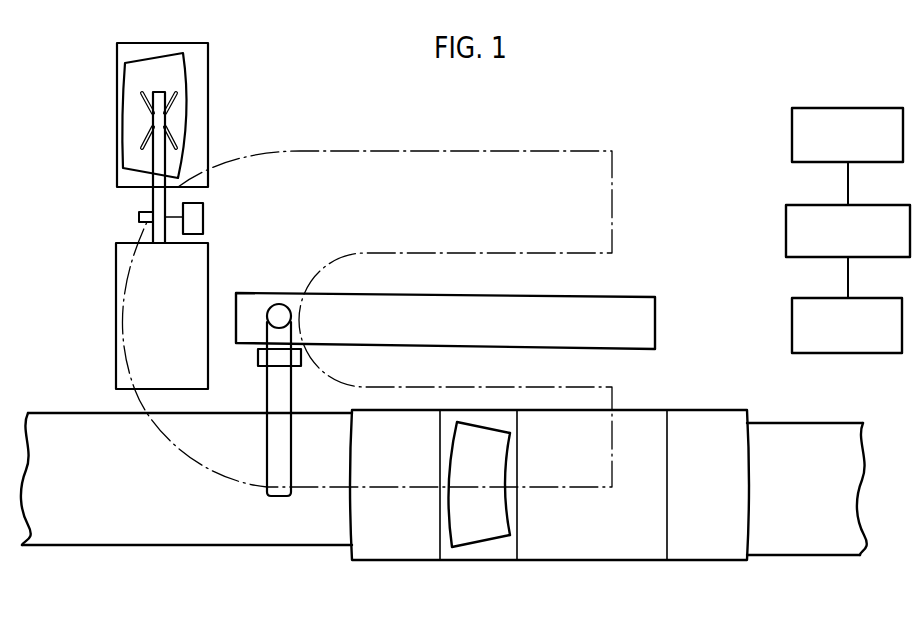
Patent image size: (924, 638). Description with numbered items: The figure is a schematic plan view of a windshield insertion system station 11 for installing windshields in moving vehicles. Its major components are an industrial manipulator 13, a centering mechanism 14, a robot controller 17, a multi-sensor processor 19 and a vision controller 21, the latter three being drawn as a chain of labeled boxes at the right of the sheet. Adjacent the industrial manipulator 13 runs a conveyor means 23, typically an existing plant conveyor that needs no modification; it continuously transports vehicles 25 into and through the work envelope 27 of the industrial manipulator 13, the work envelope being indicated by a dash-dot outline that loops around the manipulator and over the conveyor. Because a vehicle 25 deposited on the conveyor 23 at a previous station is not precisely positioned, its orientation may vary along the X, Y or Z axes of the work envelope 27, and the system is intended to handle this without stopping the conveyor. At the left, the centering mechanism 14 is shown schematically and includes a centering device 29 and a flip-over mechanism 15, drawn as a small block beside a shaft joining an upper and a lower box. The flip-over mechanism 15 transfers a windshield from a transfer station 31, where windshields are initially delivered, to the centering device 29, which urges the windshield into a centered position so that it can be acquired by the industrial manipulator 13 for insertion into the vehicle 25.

The windshield insertion system station 11 is at (620, 297).
The industrial manipulator 13 is at (263, 495).
The centering mechanism 14 is at (116, 216).
The flip-over mechanism 15 is at (203, 222).
The robot controller 17 is at (792, 130).
The multi-sensor processor 19 is at (786, 222).
The vision controller 21 is at (792, 315).
The conveyor means 23 is at (851, 518).
The vehicle 25 is at (582, 563).
The work envelope 27 is at (345, 154).
The centering device 29 is at (117, 381).
The transfer station 31 is at (127, 104).